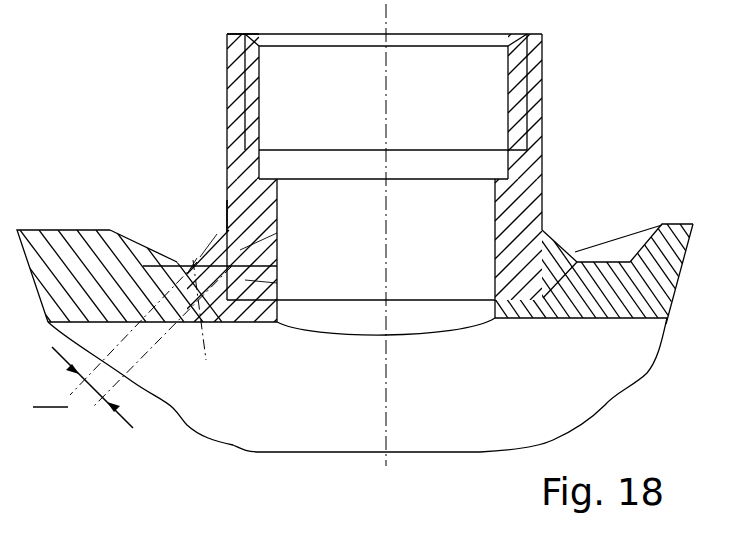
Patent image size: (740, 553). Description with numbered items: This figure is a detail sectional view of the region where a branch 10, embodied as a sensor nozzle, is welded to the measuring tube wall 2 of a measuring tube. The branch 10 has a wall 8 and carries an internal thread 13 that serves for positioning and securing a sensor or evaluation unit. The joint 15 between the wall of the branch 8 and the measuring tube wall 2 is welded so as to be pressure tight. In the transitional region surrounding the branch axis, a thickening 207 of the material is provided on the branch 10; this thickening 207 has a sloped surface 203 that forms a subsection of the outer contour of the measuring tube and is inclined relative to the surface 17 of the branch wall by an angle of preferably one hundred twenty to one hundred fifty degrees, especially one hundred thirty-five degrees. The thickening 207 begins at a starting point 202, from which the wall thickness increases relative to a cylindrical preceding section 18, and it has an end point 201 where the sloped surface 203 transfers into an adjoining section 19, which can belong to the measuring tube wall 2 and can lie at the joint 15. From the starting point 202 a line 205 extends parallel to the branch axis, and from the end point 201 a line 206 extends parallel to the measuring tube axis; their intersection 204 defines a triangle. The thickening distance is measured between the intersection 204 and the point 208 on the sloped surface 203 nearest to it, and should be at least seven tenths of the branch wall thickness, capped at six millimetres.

The branch 10 is at (560, 146).
The surface of the wall of the branch 17 is at (226, 60).
The preceding section 18 is at (226, 100).
The internal thread 13 is at (262, 97).
The wall of the branch 8 is at (538, 199).
The measuring tube wall 2 is at (672, 248).
The adjoining section 19 is at (111, 231).
The end point 201 is at (205, 267).
The starting point 202 is at (228, 231).
The sloped surface 203 is at (132, 345).
The intersection 204 is at (280, 228).
The line 205 is at (280, 283).
The line 206 is at (280, 266).
The thickening 207 is at (218, 257).
The point on the sloped surface 208 is at (197, 258).
The joint 15 is at (207, 282).